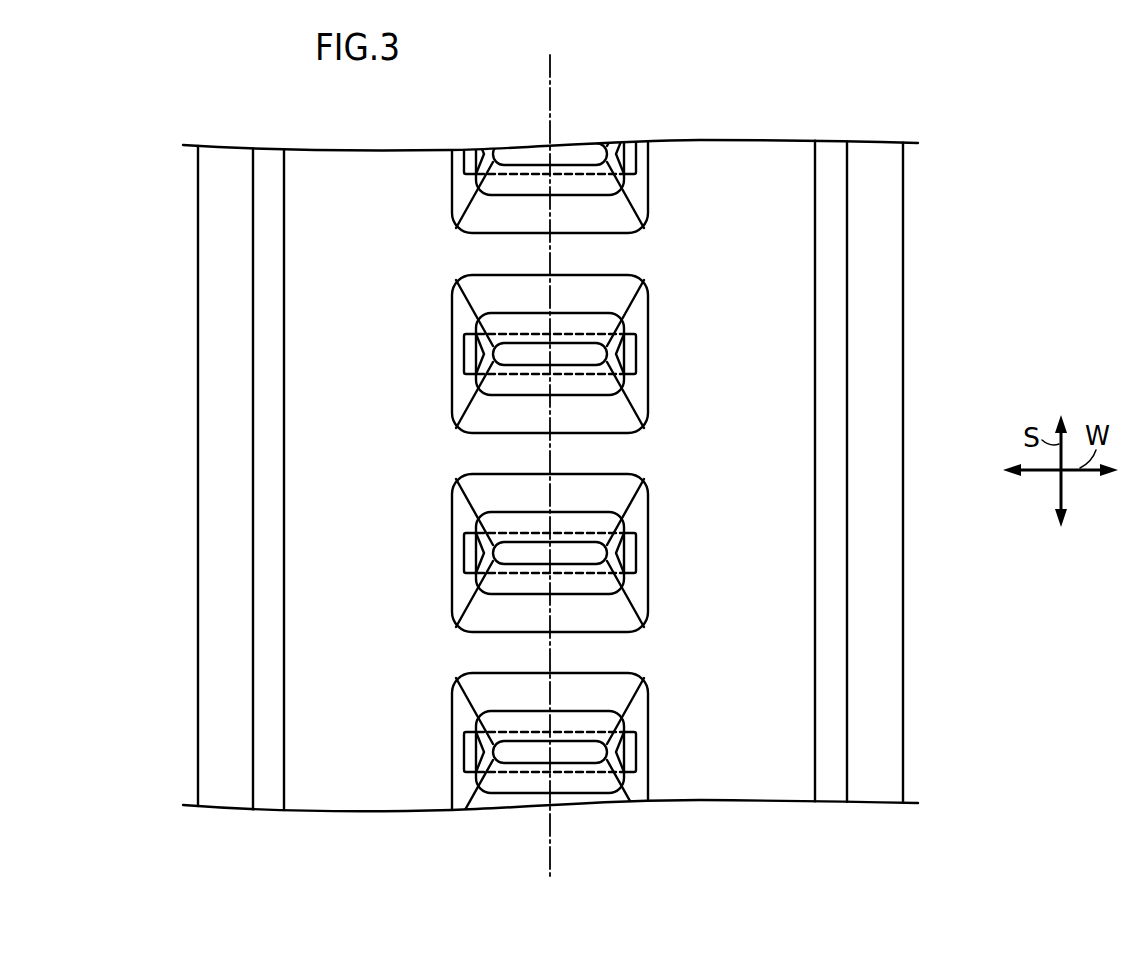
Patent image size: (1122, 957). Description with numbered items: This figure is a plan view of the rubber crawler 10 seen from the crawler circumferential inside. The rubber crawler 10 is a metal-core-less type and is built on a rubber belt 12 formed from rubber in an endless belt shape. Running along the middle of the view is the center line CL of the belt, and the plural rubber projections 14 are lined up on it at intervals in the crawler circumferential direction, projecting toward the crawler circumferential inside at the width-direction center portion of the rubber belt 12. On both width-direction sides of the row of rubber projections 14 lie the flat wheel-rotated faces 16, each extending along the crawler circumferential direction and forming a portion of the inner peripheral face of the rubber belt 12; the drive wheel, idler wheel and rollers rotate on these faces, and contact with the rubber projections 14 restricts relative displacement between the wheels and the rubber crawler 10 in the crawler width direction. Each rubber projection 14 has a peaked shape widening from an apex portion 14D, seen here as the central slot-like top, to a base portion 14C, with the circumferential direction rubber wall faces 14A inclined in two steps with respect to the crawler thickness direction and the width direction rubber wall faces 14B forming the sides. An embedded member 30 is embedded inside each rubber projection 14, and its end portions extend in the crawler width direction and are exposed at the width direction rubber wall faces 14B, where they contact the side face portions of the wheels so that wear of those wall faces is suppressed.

The rubber crawler 10 is at (107, 141).
The rubber belt 12 is at (906, 190).
The rubber projection 14 is at (660, 187).
The circumferential direction rubber wall face 14A is at (598, 284).
The width direction rubber wall face 14B is at (458, 383).
The base portion 14C is at (649, 313).
The apex portion 14D is at (515, 352).
The wheel-rotated face 16 is at (371, 783).
The embedded member 30 is at (648, 351).
The center line CL is at (551, 81).